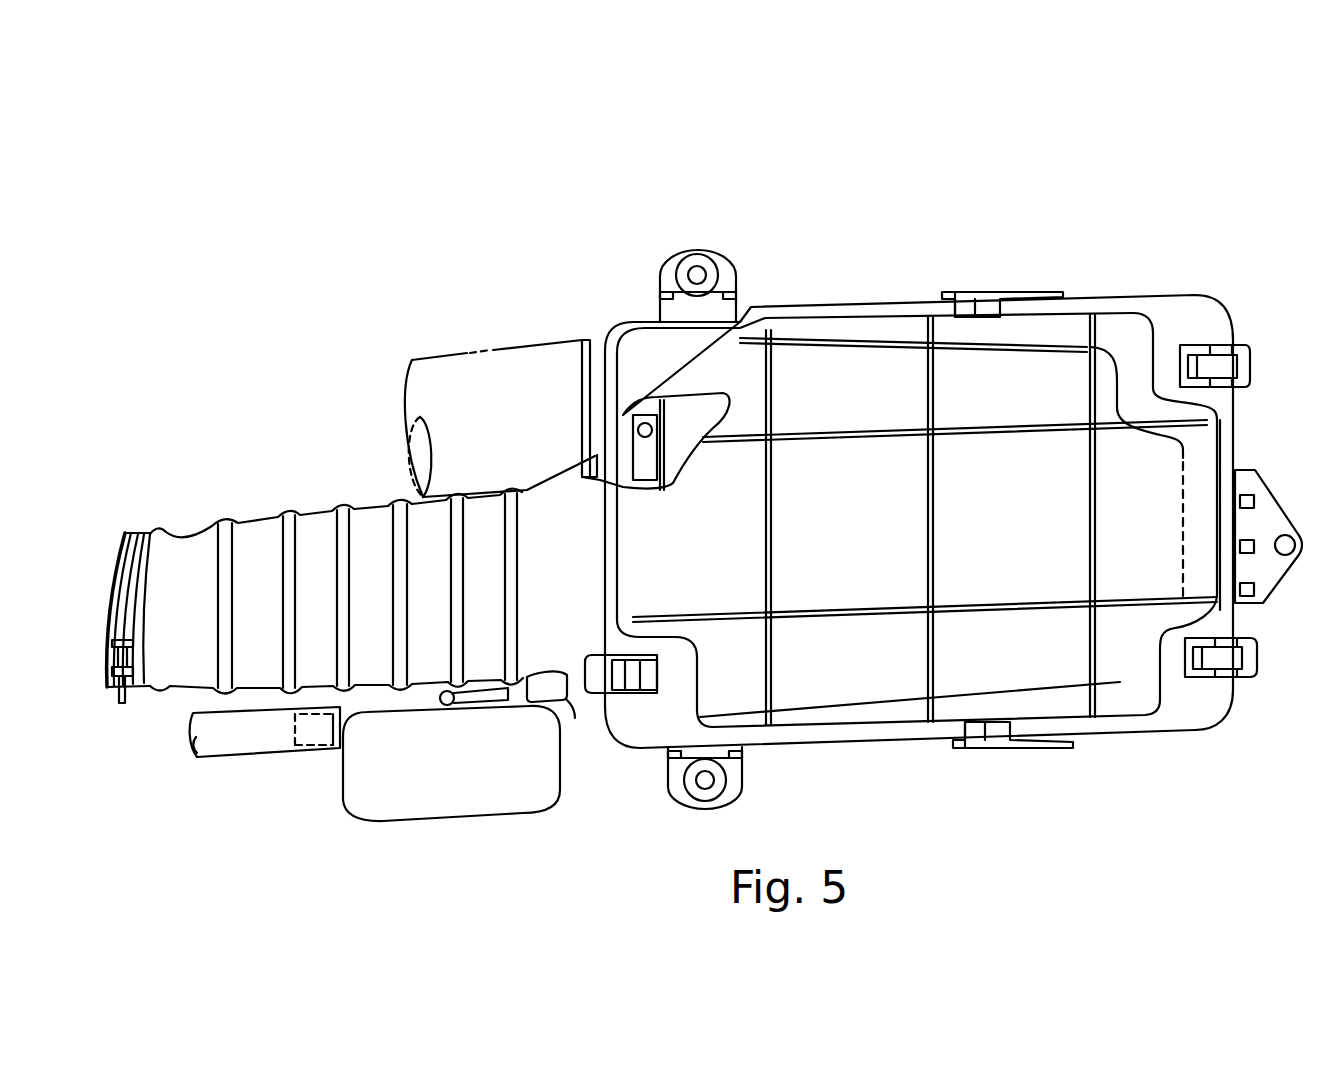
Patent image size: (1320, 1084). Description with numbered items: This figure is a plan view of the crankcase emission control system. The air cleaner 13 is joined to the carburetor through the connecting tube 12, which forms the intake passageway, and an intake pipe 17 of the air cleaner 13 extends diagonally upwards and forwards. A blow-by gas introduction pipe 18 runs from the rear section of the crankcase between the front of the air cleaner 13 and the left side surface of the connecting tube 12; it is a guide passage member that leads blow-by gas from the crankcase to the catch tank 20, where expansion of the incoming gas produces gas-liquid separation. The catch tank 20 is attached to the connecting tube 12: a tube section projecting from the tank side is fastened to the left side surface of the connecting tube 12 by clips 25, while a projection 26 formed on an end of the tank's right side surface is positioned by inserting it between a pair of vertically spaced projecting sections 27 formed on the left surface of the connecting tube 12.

The connecting tube 12 is at (249, 532).
The air cleaner 13 is at (1245, 311).
The intake pipe 17 is at (417, 393).
The blow-by gas introduction pipe 18 is at (245, 740).
The catch tank 20 is at (402, 833).
The clips 25 is at (482, 683).
The projection 26 is at (567, 713).
The projecting sections 27 is at (547, 687).